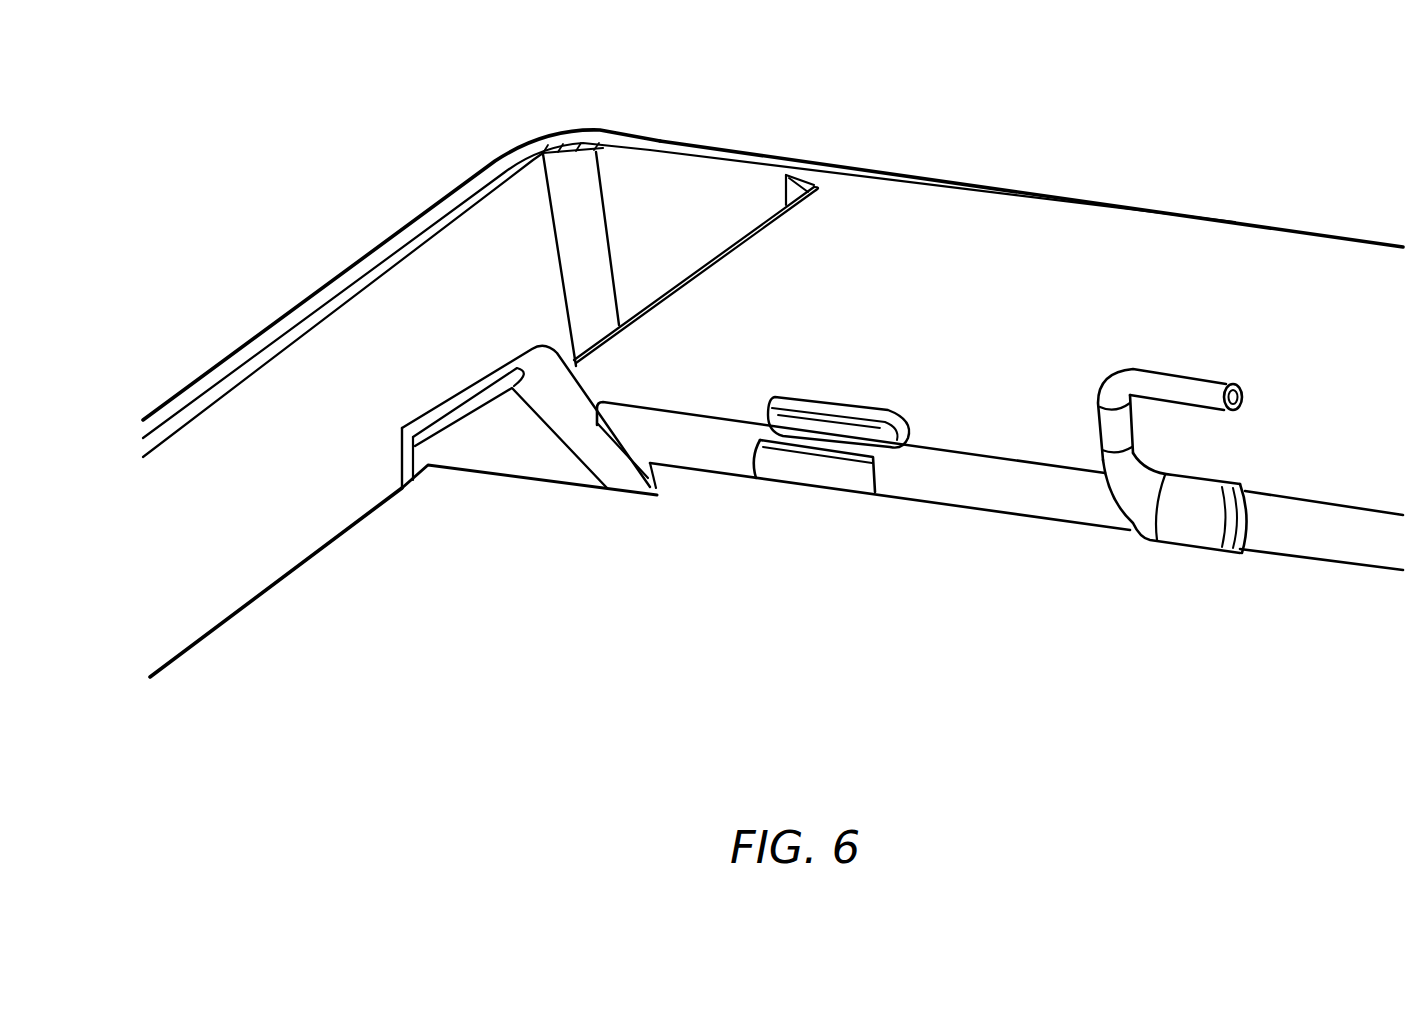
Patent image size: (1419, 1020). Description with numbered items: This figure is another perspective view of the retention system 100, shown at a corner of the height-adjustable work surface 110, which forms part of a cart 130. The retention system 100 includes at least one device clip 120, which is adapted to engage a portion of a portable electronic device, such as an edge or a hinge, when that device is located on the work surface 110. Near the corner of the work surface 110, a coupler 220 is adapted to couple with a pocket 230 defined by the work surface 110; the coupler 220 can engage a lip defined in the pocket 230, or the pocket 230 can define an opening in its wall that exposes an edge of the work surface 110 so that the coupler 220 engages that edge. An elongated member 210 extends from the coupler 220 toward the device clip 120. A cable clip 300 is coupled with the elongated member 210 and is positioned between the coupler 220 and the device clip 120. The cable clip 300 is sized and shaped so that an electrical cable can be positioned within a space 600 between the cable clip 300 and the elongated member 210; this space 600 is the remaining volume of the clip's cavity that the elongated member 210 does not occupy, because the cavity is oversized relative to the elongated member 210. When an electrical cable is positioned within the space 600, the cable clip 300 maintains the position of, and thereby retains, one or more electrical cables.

The retention system 100 is at (1289, 356).
The work surface 110 is at (847, 277).
The device clip 120 is at (1187, 540).
The cart 130 is at (262, 208).
The elongated member 210 is at (1003, 467).
The coupler 220 is at (575, 390).
The pocket 230 is at (675, 210).
The cable clip 300 is at (818, 403).
The space 600 is at (914, 434).